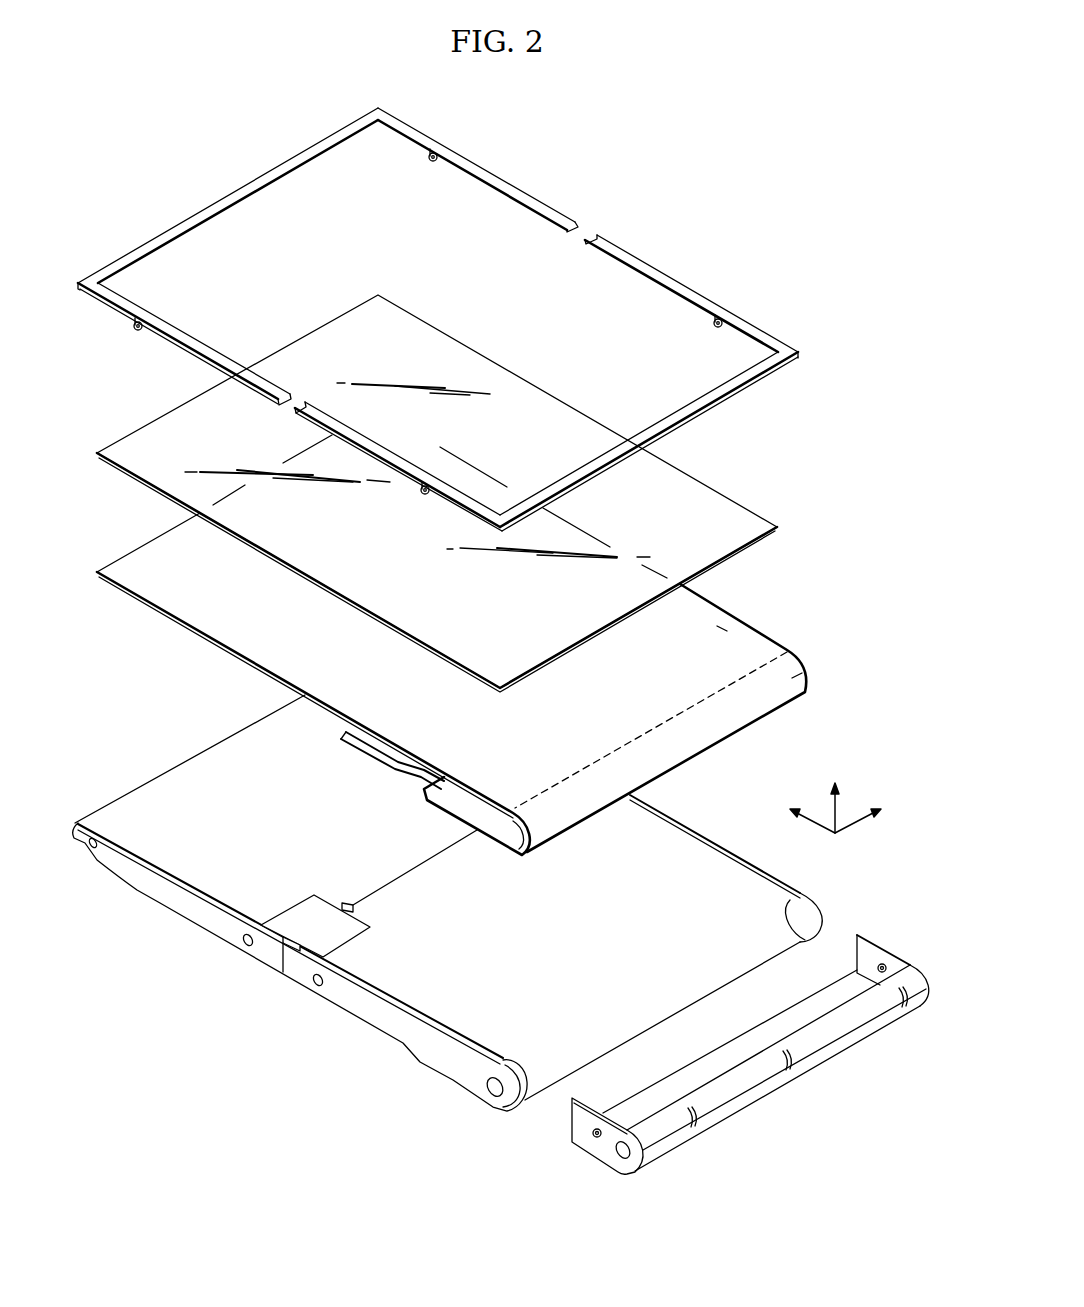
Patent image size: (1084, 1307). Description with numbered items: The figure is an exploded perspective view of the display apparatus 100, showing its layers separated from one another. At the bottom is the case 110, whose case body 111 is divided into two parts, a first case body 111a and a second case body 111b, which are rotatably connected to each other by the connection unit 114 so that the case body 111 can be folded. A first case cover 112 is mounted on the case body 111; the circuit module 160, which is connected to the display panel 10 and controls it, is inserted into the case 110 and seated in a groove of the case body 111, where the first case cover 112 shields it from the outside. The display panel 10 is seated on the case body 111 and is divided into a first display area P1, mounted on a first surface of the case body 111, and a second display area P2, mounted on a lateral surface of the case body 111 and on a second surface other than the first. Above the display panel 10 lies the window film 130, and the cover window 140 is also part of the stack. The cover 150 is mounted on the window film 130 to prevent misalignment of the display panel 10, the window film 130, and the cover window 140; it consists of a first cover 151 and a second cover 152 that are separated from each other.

The display apparatus 100 is at (774, 177).
The display panel 10 is at (762, 630).
The case 110 is at (202, 1013).
The case body 111 is at (357, 960).
The first case body 111a is at (183, 790).
The second case body 111b is at (673, 848).
The first case cover 112 is at (358, 1010).
The connection unit 114 is at (275, 938).
The window film 130 is at (713, 480).
The cover window 140 is at (790, 1091).
The cover 150 is at (572, 150).
The first cover 151 is at (547, 210).
The second cover 152 is at (613, 247).
The circuit module 160 is at (350, 737).
The first display area P1 is at (722, 628).
The second display area P2 is at (797, 675).